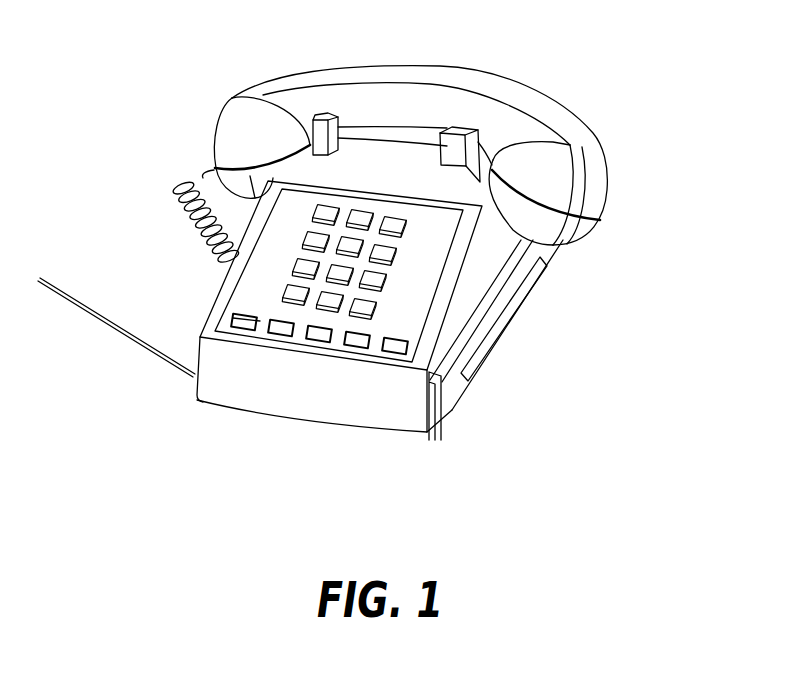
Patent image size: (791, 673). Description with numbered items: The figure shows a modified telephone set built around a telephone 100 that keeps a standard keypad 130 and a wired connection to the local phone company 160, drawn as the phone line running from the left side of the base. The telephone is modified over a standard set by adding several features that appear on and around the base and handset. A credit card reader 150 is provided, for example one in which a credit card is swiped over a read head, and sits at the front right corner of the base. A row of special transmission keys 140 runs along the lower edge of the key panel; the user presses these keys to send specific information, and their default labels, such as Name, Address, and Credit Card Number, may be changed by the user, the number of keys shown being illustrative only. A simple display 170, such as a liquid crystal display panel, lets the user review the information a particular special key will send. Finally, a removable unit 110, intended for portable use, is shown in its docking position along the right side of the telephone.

The telephone 100 is at (510, 78).
The removable unit 110 is at (530, 310).
The standard keypad 130 is at (310, 193).
The special transmission keys 140 is at (242, 337).
The credit card reader 150 is at (442, 398).
The wired connection to the local phone company 160 is at (62, 286).
The display 170 is at (342, 332).